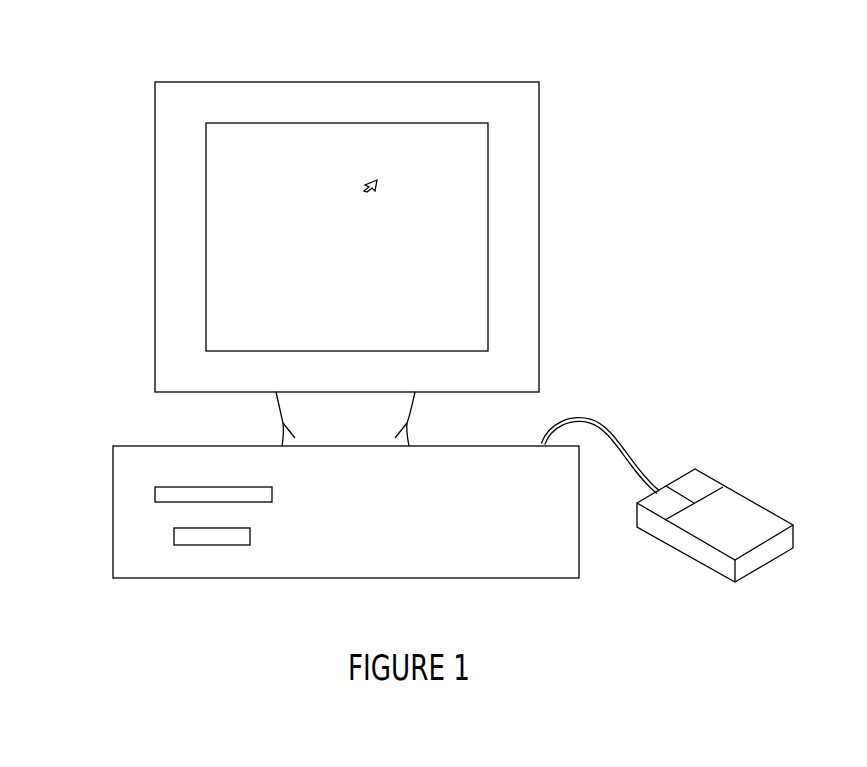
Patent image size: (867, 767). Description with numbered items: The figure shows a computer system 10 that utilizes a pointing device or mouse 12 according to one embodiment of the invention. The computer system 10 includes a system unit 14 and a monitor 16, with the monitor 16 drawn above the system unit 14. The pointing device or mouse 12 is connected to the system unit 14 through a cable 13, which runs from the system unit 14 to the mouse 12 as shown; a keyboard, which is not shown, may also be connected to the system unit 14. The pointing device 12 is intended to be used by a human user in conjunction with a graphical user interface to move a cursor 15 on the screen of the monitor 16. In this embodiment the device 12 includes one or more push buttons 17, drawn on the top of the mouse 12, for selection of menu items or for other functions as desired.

The computer system 10 is at (90, 333).
The pointing device or mouse 12 is at (747, 498).
The cable 13 is at (590, 415).
The system unit 14 is at (113, 517).
The cursor 15 is at (369, 175).
The monitor 16 is at (154, 262).
The push buttons 17 is at (665, 505).